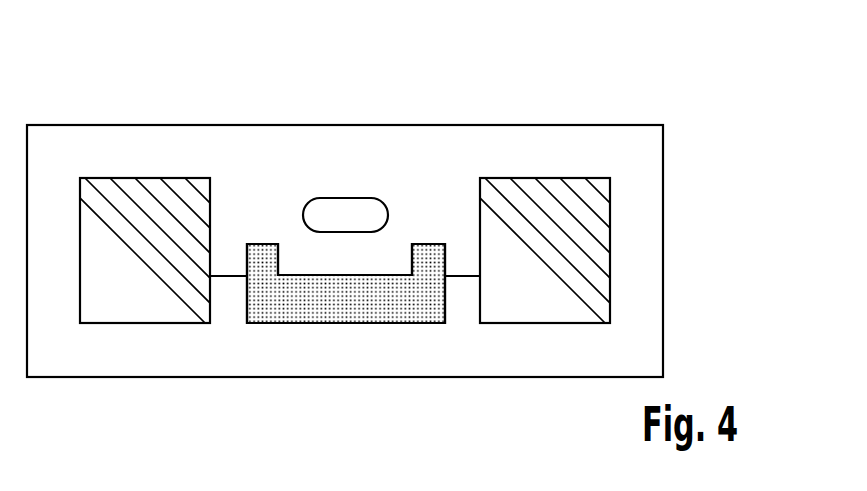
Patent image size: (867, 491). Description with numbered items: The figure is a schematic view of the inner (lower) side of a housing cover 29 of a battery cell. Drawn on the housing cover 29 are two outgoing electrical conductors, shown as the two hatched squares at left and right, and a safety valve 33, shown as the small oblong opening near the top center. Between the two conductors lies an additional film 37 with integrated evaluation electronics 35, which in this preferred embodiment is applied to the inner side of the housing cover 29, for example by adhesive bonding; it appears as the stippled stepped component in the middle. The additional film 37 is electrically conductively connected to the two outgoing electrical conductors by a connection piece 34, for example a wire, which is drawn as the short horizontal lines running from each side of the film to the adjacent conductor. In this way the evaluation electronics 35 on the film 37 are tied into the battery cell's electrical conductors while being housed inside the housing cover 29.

The housing cover 29 is at (231, 71).
The safety valve 33 is at (348, 213).
The connection piece 34 is at (465, 282).
The evaluation electronics 35 is at (392, 290).
The additional film 37 is at (346, 283).